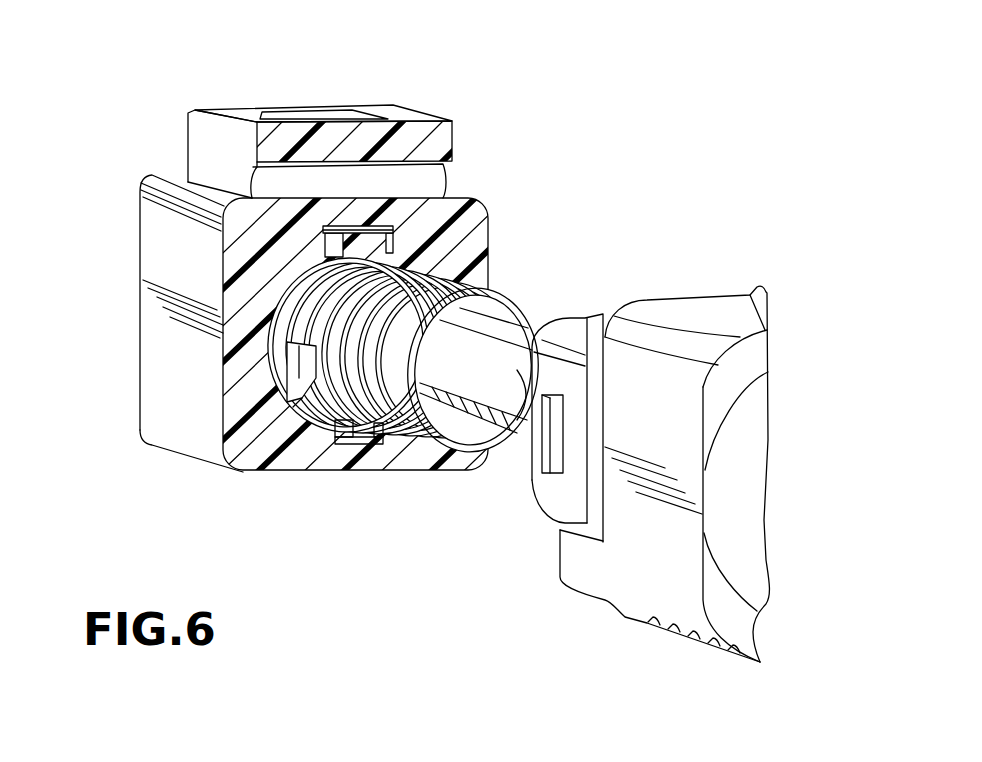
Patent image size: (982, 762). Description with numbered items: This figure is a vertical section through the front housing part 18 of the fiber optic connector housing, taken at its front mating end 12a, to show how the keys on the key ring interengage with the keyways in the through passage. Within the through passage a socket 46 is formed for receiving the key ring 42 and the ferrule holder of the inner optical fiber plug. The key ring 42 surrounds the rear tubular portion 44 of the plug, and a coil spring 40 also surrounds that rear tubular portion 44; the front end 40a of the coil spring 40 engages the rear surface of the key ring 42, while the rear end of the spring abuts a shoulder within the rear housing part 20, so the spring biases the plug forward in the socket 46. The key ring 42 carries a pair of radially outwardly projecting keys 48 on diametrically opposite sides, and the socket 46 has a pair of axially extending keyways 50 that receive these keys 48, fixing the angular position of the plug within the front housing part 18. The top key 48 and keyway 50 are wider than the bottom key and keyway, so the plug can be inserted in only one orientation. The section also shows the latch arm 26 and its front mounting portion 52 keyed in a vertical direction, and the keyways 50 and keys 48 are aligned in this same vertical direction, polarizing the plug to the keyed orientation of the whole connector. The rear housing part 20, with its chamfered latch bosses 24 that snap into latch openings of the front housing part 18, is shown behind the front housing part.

The front mating end 12a is at (141, 262).
The front housing part 18 is at (297, 457).
The rear housing part 20 is at (673, 318).
The latch bosses 24 is at (553, 447).
The latch arm 26 is at (450, 143).
The coil spring 40 is at (462, 296).
The front end of coil spring 40a is at (293, 407).
The key ring 42 is at (288, 291).
The rear tubular portion 44 is at (492, 383).
The socket 46 is at (290, 345).
The keys 48 is at (395, 255).
The keyways 50 is at (445, 198).
The front mounting portion 52 is at (205, 147).